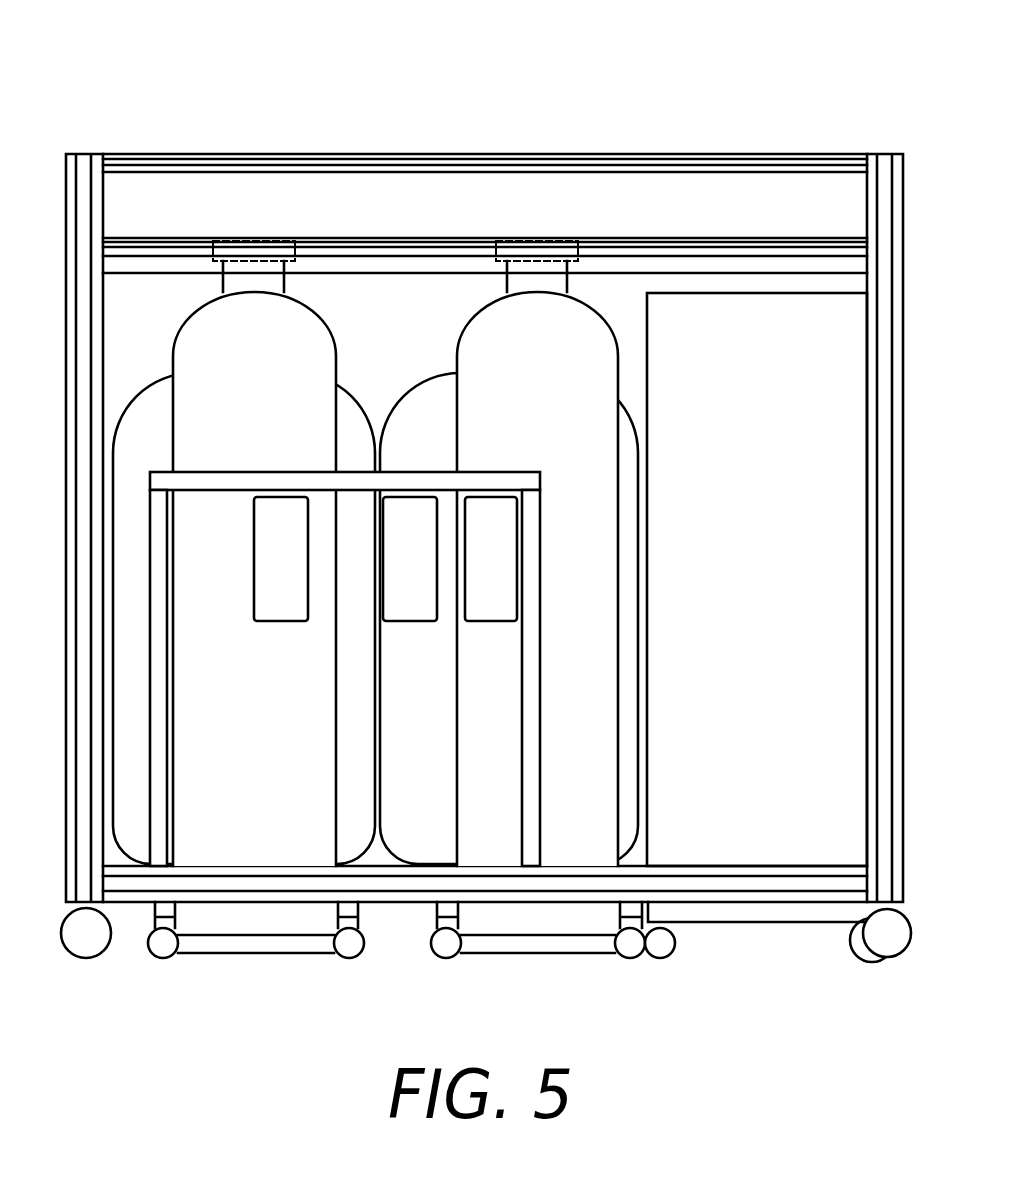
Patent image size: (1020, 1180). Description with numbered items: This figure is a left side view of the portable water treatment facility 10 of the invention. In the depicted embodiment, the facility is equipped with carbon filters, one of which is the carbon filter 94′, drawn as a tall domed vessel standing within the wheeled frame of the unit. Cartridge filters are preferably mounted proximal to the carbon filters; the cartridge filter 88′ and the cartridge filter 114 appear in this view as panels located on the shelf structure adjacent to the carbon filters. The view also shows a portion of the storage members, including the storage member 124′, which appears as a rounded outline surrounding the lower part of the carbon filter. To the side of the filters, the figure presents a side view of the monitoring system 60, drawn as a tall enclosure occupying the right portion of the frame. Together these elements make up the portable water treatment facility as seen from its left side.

The portable water treatment facility 10 is at (112, 76).
The monitoring system 60 is at (760, 457).
The carbon filter 94′ is at (270, 422).
The storage member 124′ is at (165, 454).
The cartridge filter 88′ is at (298, 577).
The cartridge filter 114 is at (512, 576).